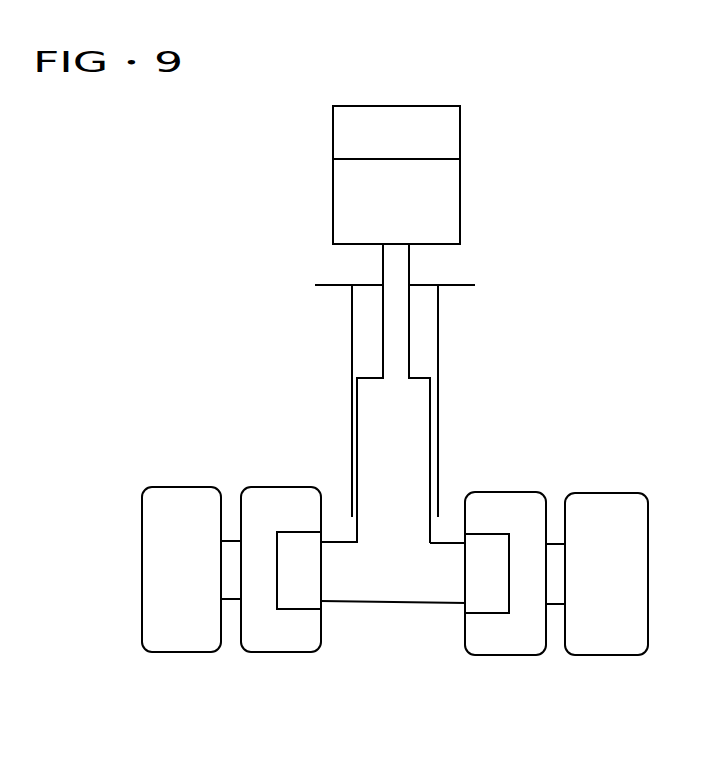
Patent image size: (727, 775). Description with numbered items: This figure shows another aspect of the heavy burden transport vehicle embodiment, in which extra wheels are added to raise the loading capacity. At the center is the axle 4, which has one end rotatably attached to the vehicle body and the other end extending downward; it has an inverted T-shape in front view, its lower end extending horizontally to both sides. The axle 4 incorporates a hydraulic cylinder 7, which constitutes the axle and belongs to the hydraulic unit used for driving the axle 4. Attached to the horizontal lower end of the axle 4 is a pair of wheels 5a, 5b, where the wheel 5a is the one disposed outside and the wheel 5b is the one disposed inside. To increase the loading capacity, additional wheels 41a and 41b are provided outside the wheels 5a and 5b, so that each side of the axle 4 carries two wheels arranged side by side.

The axle 4 is at (460, 381).
The hydraulic cylinder 7 is at (352, 335).
The wheel 41a is at (173, 652).
The wheel 41b is at (613, 655).
The wheel 5a is at (285, 652).
The wheel 5b is at (498, 655).